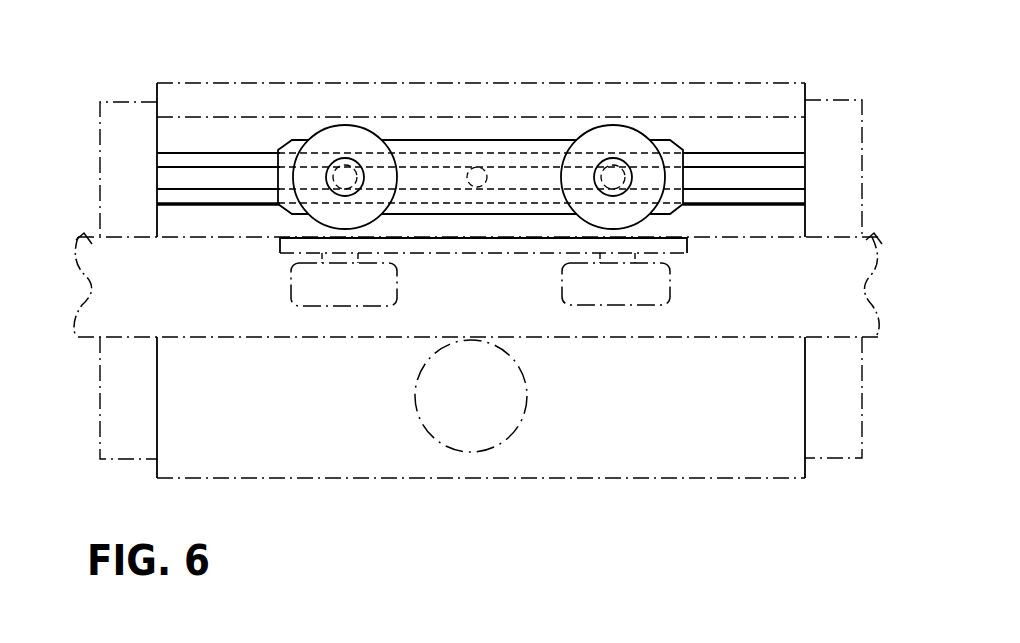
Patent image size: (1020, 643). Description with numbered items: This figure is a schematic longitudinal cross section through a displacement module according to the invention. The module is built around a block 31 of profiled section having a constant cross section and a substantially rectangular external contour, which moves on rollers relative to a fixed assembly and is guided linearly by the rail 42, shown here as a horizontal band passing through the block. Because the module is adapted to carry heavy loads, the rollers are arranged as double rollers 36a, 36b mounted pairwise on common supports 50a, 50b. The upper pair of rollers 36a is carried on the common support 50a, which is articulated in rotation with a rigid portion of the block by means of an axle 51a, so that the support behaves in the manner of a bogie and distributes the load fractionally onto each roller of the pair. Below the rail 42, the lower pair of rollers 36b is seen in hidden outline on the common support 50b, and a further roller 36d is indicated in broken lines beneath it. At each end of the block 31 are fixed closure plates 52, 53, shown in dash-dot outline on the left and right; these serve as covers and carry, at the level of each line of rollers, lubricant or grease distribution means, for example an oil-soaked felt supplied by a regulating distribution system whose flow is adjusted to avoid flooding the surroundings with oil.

The block 31 is at (214, 77).
The double rollers 36a is at (345, 125).
The double rollers 36b is at (367, 292).
The roller 36d is at (415, 388).
The rail 42 is at (206, 345).
The common support 50a is at (408, 139).
The common support 50b is at (447, 253).
The axle 51a is at (481, 165).
The closure plate 52 is at (92, 122).
The closure plate 53 is at (872, 104).